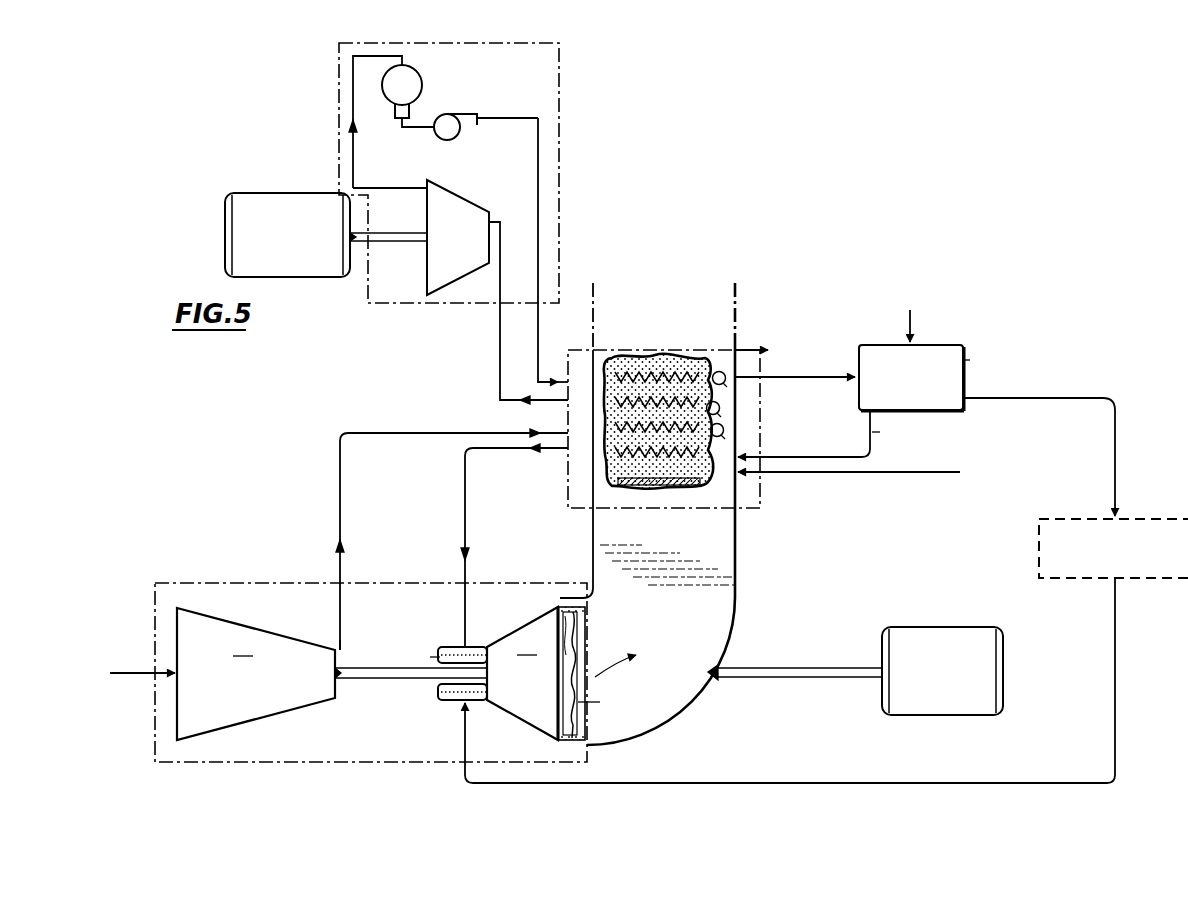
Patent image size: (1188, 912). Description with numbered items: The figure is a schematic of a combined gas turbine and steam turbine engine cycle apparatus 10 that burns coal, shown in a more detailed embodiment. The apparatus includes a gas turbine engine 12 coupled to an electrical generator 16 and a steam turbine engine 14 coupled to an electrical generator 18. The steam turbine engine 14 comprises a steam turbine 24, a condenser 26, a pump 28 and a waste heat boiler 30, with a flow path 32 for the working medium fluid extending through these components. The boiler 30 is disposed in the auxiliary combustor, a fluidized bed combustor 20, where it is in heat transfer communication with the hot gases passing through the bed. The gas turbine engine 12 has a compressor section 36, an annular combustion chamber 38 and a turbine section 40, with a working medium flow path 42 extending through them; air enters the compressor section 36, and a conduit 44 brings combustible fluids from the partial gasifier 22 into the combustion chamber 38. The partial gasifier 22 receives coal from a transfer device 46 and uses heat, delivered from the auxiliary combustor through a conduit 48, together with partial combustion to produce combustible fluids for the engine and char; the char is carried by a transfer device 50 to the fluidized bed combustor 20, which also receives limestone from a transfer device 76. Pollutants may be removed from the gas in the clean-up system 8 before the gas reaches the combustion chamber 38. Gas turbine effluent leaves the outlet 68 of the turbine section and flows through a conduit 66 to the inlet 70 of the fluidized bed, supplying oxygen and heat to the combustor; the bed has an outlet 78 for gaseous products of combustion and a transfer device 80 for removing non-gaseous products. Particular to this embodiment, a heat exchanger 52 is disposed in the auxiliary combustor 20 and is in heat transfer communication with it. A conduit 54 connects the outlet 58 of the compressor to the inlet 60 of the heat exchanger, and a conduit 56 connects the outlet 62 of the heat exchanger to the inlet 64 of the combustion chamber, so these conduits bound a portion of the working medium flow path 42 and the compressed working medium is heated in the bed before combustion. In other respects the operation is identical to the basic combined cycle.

The clean up unit 8 is at (1161, 518).
The combined gas turbine and steam turbine engine cycle apparatus 10 is at (303, 403).
The gas turbine engine 12 is at (219, 582).
The steam turbine engine 14 is at (336, 96).
The electrical generator 16 is at (940, 628).
The electrical generator 18 is at (262, 198).
The fluidized bed combustor 20 is at (560, 493).
The partial gasifier 22 is at (968, 340).
The steam turbine 24 is at (464, 196).
The condenser 26 is at (422, 77).
The pump 28 is at (460, 136).
The waste heat boiler 30 is at (713, 368).
The flow path for working medium fluid 32 is at (502, 336).
The compressor section 36 is at (332, 674).
The annular combustion chamber 38 is at (481, 646).
The turbine section 40 is at (536, 673).
The working medium flow path 42 is at (163, 672).
The conduit 44 is at (1063, 398).
The transfer device 46 is at (906, 324).
The conduit for transferring heat 48 is at (812, 378).
The transfer device for char 50 is at (815, 462).
The heat exchanger 52 is at (716, 474).
The conduit 54 is at (345, 572).
The conduit 56 is at (462, 572).
The outlet of the compressor 58 is at (335, 648).
The inlet of the heat exchanger 60 is at (555, 434).
The outlet of the heat exchanger 62 is at (553, 450).
The inlet of the combustion chamber 64 is at (456, 647).
The conduit for gas turbine effluent 66 is at (738, 606).
The outlet of the gas turbine engine 68 is at (579, 655).
The inlet of the fluidized bed 70 is at (738, 508).
The transfer device 76 is at (910, 472).
The outlet for gaseous products of combustion 78 is at (672, 313).
The transfer device for removing non-gaseous products of combustion 80 is at (752, 350).